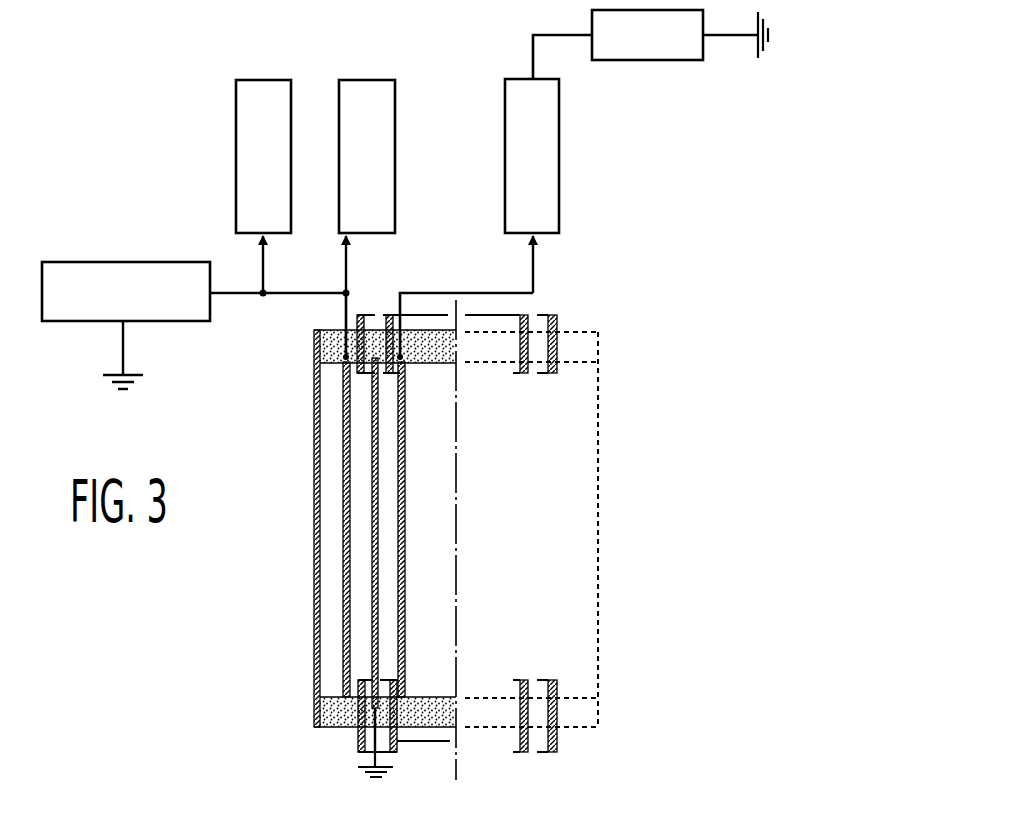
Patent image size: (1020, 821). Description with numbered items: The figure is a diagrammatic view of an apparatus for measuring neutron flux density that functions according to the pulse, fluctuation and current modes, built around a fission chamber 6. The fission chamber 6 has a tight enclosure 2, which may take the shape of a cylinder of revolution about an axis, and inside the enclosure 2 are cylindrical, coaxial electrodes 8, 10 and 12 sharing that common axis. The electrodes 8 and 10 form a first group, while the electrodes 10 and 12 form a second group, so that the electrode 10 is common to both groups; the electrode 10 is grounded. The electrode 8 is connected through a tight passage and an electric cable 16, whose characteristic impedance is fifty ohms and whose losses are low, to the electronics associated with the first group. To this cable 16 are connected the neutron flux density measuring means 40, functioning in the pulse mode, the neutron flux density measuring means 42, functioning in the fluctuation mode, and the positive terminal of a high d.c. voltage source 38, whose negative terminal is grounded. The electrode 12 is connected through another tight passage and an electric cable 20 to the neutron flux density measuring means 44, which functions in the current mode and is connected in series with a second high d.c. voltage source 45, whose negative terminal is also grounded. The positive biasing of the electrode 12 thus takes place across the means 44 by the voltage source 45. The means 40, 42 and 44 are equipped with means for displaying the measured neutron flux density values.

The tight enclosure 2 is at (318, 483).
The fission chamber 6 is at (292, 708).
The electrode 8 is at (345, 557).
The electrode 10 is at (375, 628).
The electrode 12 is at (402, 541).
The electric cable 16 is at (318, 293).
The electric cable 20 is at (533, 288).
The high d.c. voltage source 38 is at (74, 270).
The neutron flux density measuring means 40 is at (247, 105).
The neutron flux density measuring means 42 is at (368, 95).
The neutron flux density measuring means 44 is at (553, 118).
The high d.c. voltage source 45 is at (684, 52).